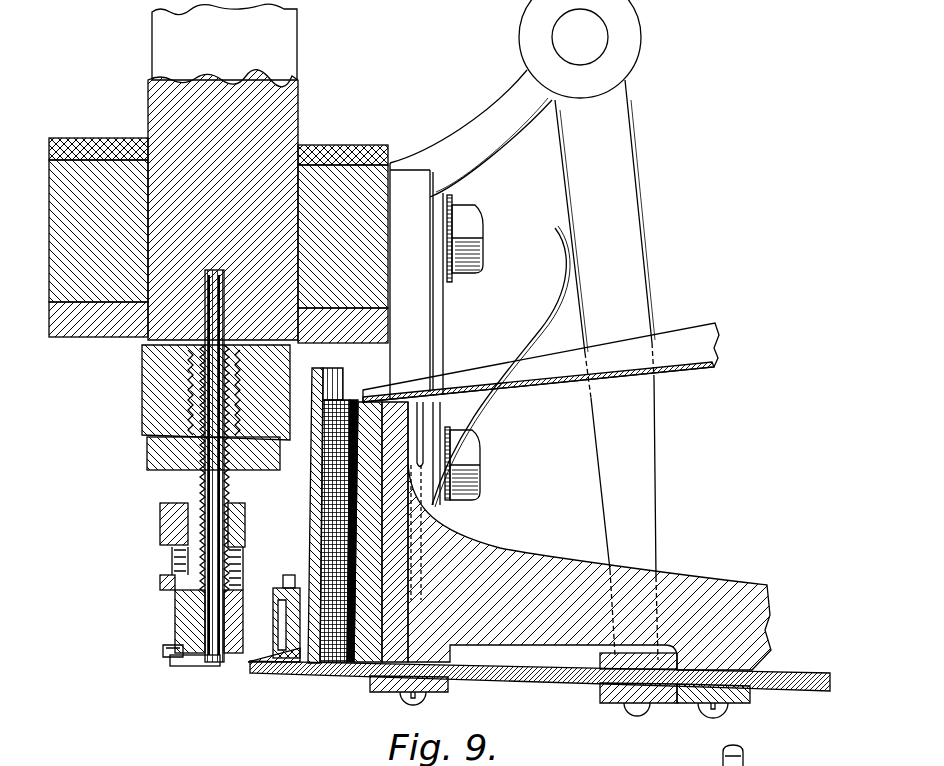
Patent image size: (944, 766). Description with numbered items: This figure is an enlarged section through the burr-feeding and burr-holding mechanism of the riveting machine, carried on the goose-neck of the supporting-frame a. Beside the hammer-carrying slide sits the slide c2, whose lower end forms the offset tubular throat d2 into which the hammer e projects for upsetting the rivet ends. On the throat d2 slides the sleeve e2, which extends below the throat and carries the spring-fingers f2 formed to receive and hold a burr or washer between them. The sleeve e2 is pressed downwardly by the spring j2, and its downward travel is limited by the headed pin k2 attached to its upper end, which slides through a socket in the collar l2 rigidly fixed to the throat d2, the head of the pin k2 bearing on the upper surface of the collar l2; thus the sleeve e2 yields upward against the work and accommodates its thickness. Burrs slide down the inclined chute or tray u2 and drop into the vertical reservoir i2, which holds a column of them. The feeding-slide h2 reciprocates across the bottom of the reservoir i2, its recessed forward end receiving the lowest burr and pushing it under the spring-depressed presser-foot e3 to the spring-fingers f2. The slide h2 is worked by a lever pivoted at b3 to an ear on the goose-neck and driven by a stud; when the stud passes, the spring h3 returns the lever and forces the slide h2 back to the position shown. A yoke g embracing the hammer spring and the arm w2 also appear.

The supporting-frame a is at (223, 172).
The pivot b3 is at (580, 49).
The slide c2 is at (150, 402).
The offset tubular throat d2 is at (238, 487).
The hammer e is at (205, 483).
The sleeve e2 is at (175, 615).
The presser-foot e3 is at (277, 662).
The spring-fingers f2 is at (190, 666).
The yoke g is at (383, 392).
The feeding-slide h2 is at (485, 673).
The spring h3 is at (532, 327).
The vertical reservoir i2 is at (336, 511).
The spring j2 is at (232, 562).
The headed pin k2 is at (170, 555).
The collar l2 is at (160, 521).
The inclined chute or tray u2 is at (678, 350).
The arm w2 is at (633, 458).